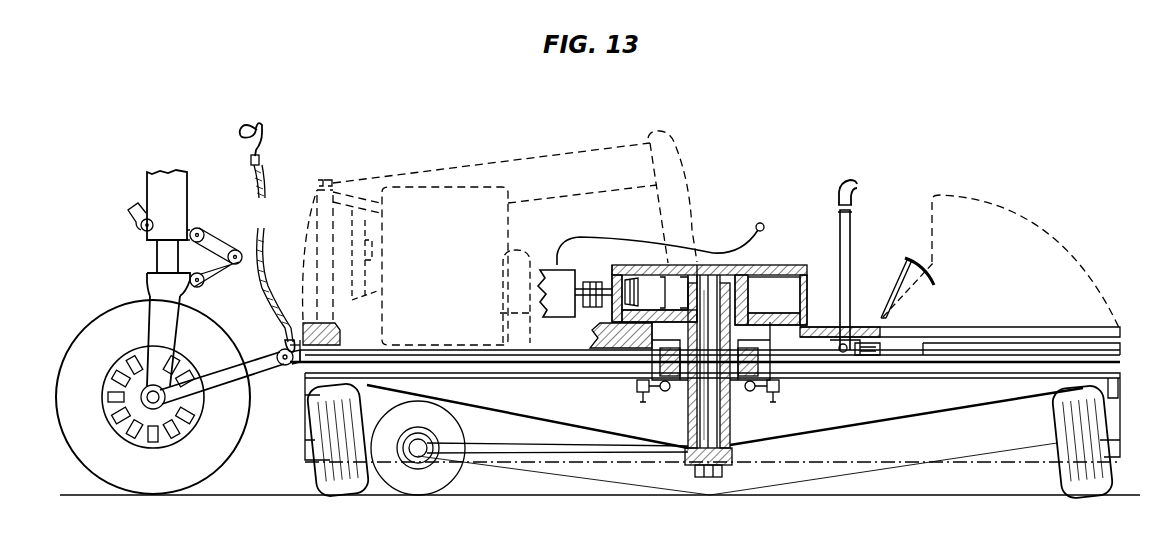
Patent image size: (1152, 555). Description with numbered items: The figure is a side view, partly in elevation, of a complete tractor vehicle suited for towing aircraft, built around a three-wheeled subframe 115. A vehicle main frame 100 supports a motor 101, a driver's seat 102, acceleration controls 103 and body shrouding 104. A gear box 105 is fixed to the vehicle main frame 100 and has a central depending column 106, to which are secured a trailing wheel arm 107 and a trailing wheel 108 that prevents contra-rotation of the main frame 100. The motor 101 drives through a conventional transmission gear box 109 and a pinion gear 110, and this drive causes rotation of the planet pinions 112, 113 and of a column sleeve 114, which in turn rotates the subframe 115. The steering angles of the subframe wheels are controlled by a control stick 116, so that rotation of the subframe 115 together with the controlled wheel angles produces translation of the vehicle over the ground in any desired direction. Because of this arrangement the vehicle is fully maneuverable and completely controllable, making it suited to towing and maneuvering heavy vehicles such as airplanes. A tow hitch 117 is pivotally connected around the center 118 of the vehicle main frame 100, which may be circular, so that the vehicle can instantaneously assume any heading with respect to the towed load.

The vehicle main frame 100 is at (397, 338).
The motor 101 is at (500, 260).
The driver's seat 102 is at (688, 223).
The acceleration controls 103 is at (888, 300).
The body shrouding 104 is at (1030, 237).
The gear box 105 is at (709, 271).
The central depending column 106 is at (712, 428).
The trailing wheel arm 107 is at (637, 457).
The trailing wheel 108 is at (420, 470).
The transmission gear box 109 is at (558, 242).
The pinion gear 110 is at (654, 270).
The planet pinion 112 is at (662, 276).
The planet pinion 113 is at (748, 290).
The column sleeve 114 is at (732, 406).
The subframe 115 is at (910, 407).
The control stick 116 is at (851, 226).
The tow hitch 117 is at (282, 352).
The center 118 is at (650, 365).